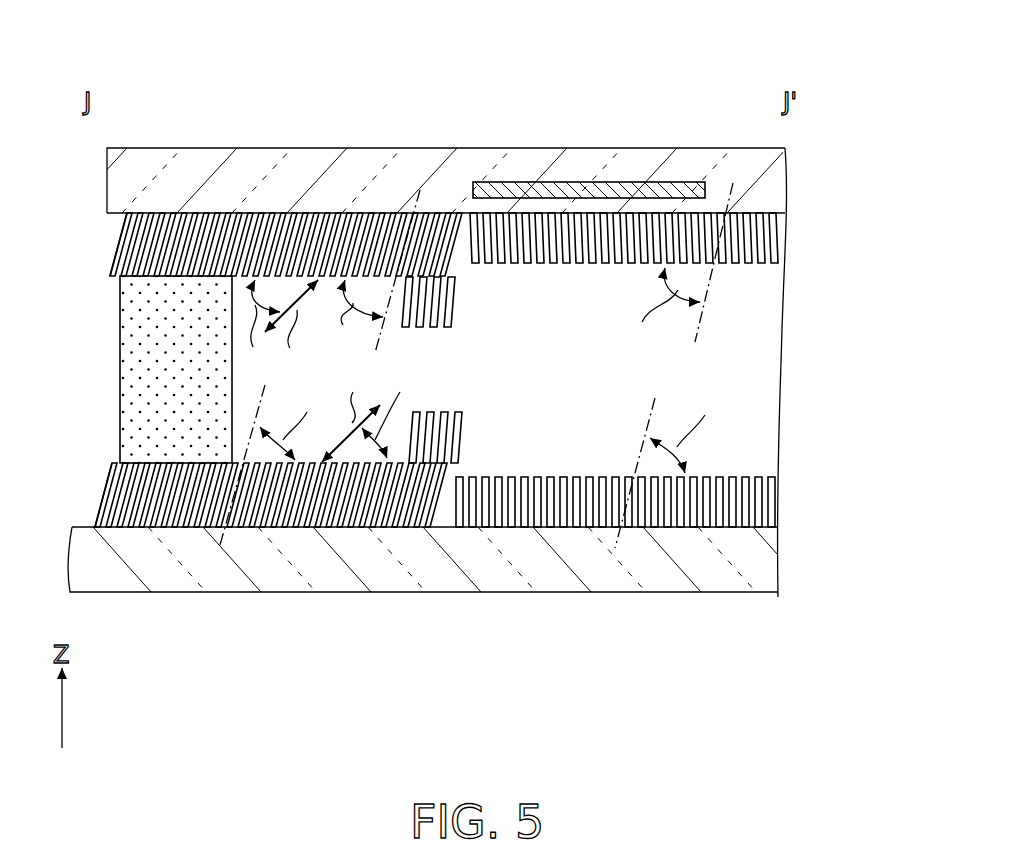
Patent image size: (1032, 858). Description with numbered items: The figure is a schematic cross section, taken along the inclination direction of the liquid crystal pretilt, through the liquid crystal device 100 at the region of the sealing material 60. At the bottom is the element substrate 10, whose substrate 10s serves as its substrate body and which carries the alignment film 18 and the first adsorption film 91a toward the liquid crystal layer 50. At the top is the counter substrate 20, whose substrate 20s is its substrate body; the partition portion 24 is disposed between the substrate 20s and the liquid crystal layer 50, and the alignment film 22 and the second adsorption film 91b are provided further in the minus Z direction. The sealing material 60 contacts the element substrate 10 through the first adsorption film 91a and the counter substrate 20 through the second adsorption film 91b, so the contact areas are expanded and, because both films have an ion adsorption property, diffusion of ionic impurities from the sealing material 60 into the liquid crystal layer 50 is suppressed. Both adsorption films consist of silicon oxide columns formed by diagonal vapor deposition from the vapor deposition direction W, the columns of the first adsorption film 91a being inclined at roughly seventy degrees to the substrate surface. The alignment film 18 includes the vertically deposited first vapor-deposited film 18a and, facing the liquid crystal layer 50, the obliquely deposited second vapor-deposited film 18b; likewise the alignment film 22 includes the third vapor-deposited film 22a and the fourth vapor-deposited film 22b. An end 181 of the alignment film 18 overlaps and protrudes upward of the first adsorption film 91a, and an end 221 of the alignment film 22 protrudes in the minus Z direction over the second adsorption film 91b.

The liquid crystal device 100 is at (762, 24).
The counter substrate 20 is at (385, 148).
The partition portion 24 is at (598, 182).
The substrate 20s is at (780, 176).
The alignment film 22 is at (890, 212).
The third vapor-deposited film 22a is at (775, 229).
The fourth vapor-deposited film 22b is at (770, 263).
The end 221 is at (460, 325).
The second adsorption film 91b is at (110, 262).
The sealing material 60 is at (120, 365).
The first adsorption film 91a is at (112, 468).
The liquid crystal layer 50 is at (765, 365).
The alignment film 18 is at (887, 450).
The first vapor-deposited film 18a is at (765, 508).
The second vapor-deposited film 18b is at (765, 470).
The end 181 is at (467, 426).
The element substrate 10 is at (385, 595).
The substrate 10s is at (765, 570).